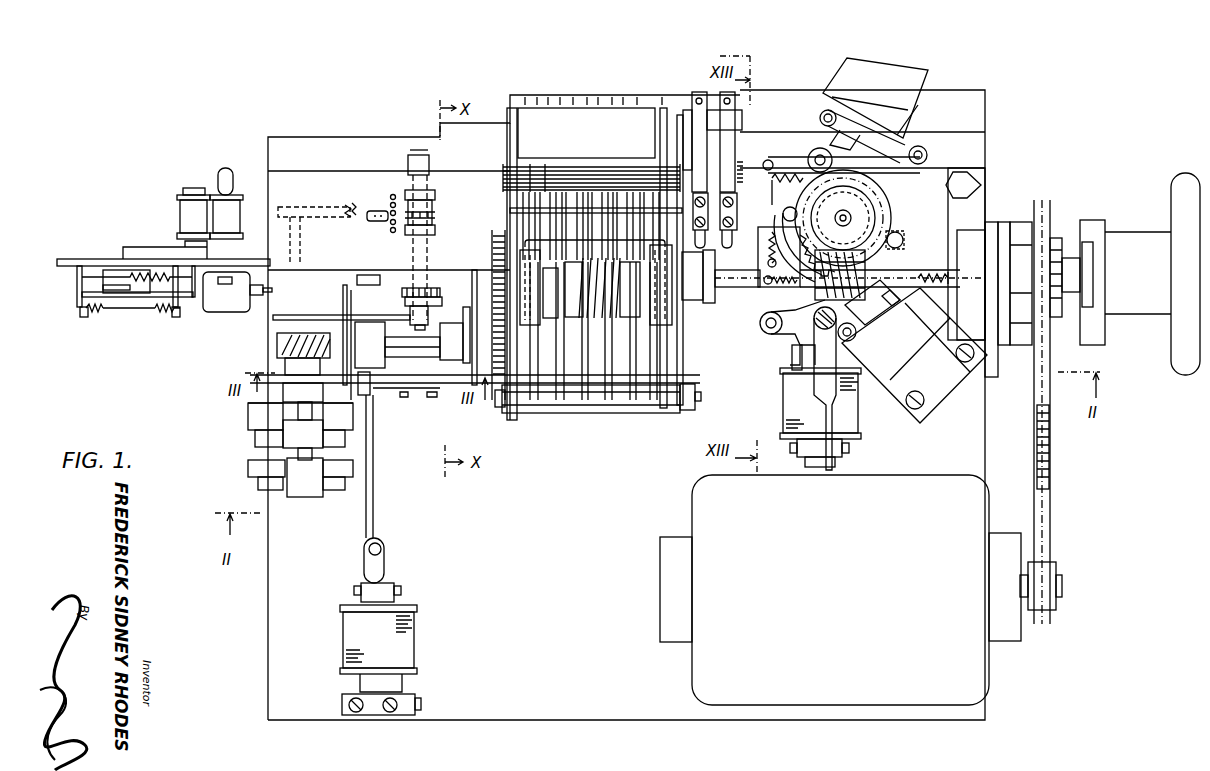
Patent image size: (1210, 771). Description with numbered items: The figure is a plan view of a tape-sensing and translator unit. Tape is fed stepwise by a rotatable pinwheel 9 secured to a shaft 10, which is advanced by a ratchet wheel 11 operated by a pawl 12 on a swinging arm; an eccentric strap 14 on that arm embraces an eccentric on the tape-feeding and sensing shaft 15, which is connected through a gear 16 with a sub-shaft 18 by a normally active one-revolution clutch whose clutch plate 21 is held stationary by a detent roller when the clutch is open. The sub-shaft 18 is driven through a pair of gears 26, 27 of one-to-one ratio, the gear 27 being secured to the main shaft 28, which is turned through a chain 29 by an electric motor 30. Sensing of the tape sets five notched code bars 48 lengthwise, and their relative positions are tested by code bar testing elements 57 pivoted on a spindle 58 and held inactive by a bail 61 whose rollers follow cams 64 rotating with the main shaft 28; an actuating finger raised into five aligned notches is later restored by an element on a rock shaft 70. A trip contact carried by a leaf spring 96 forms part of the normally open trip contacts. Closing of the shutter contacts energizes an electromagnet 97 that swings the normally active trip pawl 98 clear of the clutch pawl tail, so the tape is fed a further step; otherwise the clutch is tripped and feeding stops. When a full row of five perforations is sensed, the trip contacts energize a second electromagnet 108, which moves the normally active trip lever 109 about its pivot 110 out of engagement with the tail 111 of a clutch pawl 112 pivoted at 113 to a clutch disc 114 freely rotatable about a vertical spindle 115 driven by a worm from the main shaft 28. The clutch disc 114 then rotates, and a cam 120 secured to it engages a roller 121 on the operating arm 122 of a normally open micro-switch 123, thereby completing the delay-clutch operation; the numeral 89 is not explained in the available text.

The pinwheel 9 is at (435, 215).
The shaft 10 is at (418, 155).
The ratchet wheel 11 is at (425, 290).
The pawl 12 is at (440, 300).
The eccentric strap 14 is at (273, 318).
The tape-feeding and sensing shaft 15 is at (300, 460).
The gear 16 is at (277, 345).
The sub-shaft 18 is at (430, 345).
The clutch plate 21 is at (353, 392).
The gear 26 is at (500, 385).
The gear 27 is at (497, 232).
The main shaft 28 is at (1073, 268).
The chain 29 is at (1058, 572).
The electric motor 30 is at (705, 670).
The notched code bar 48 is at (540, 178).
The code bar testing element 57 is at (605, 370).
The spindle 58 is at (700, 400).
The bail 61 is at (565, 242).
The cam 64 is at (658, 322).
The rock shaft 70 is at (745, 120).
The terminal strip 89 is at (730, 118).
The leaf spring 96 is at (698, 118).
The electromagnet 97 is at (414, 648).
The trip pawl 98 is at (370, 412).
The electromagnet 108 is at (850, 428).
The trip lever 109 is at (763, 330).
The pivot 110 is at (778, 338).
The tail 111 is at (770, 240).
The clutch pawl 112 is at (812, 282).
The pivot 113 is at (788, 208).
The clutch disc 114 is at (800, 175).
The vertical spindle 115 is at (847, 217).
The cam 120 is at (890, 215).
The roller 121 is at (903, 240).
The operating arm 122 is at (856, 322).
The micro-switch 123 is at (880, 370).